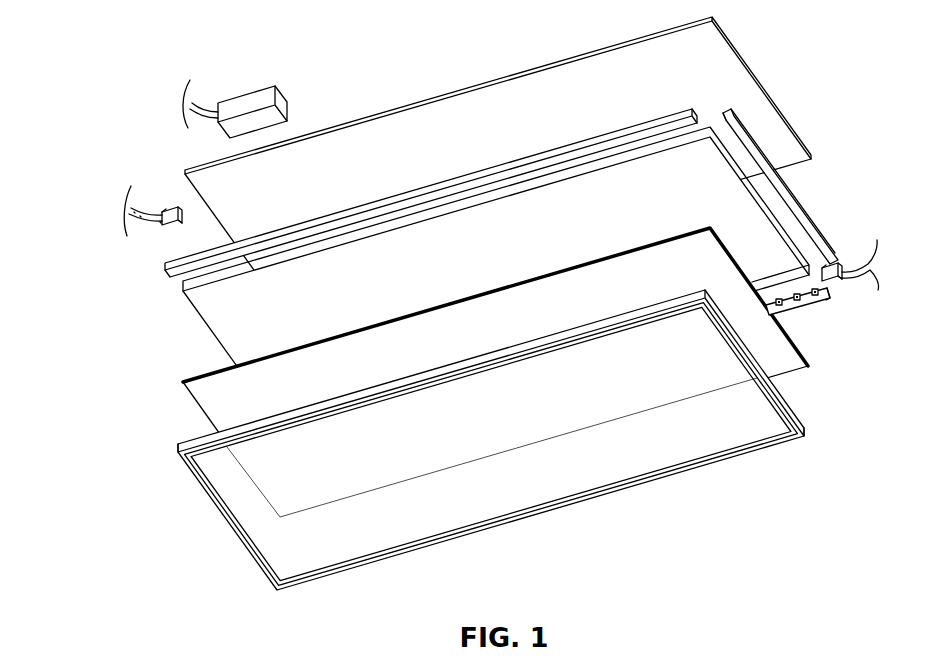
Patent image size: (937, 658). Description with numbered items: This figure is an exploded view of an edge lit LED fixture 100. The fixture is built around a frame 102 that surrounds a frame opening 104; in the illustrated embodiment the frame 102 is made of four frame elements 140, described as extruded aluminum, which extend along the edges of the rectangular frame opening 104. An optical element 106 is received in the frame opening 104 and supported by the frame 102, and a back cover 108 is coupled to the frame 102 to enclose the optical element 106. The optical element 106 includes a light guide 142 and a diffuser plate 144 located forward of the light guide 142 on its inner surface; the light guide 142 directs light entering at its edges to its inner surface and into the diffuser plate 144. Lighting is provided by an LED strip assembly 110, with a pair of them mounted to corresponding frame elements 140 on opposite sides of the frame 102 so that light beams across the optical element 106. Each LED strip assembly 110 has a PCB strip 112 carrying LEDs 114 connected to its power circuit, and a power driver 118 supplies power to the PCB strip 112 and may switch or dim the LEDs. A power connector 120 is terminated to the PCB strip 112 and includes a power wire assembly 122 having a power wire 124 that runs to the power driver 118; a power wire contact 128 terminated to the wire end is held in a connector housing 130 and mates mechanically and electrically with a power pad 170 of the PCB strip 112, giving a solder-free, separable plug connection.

The edge lit LED fixture 100 is at (301, 67).
The frame 102 is at (460, 447).
The frame opening 104 is at (556, 488).
The optical element 106 is at (517, 270).
The back cover 108 is at (492, 106).
The LED strip assembly 110 is at (88, 202).
The PCB strip 112 is at (576, 132).
The LEDs 114 is at (800, 318).
The power driver 118 is at (237, 103).
The power connector 120 is at (90, 232).
The power wire assembly 122 is at (148, 199).
The power wire 124 is at (143, 226).
The power wire contact 128 is at (160, 236).
The connector housing 130 is at (842, 267).
The frame elements 140 is at (195, 490).
The light guide 142 is at (213, 320).
The diffuser plate 144 is at (203, 395).
The power pad 170 is at (832, 294).